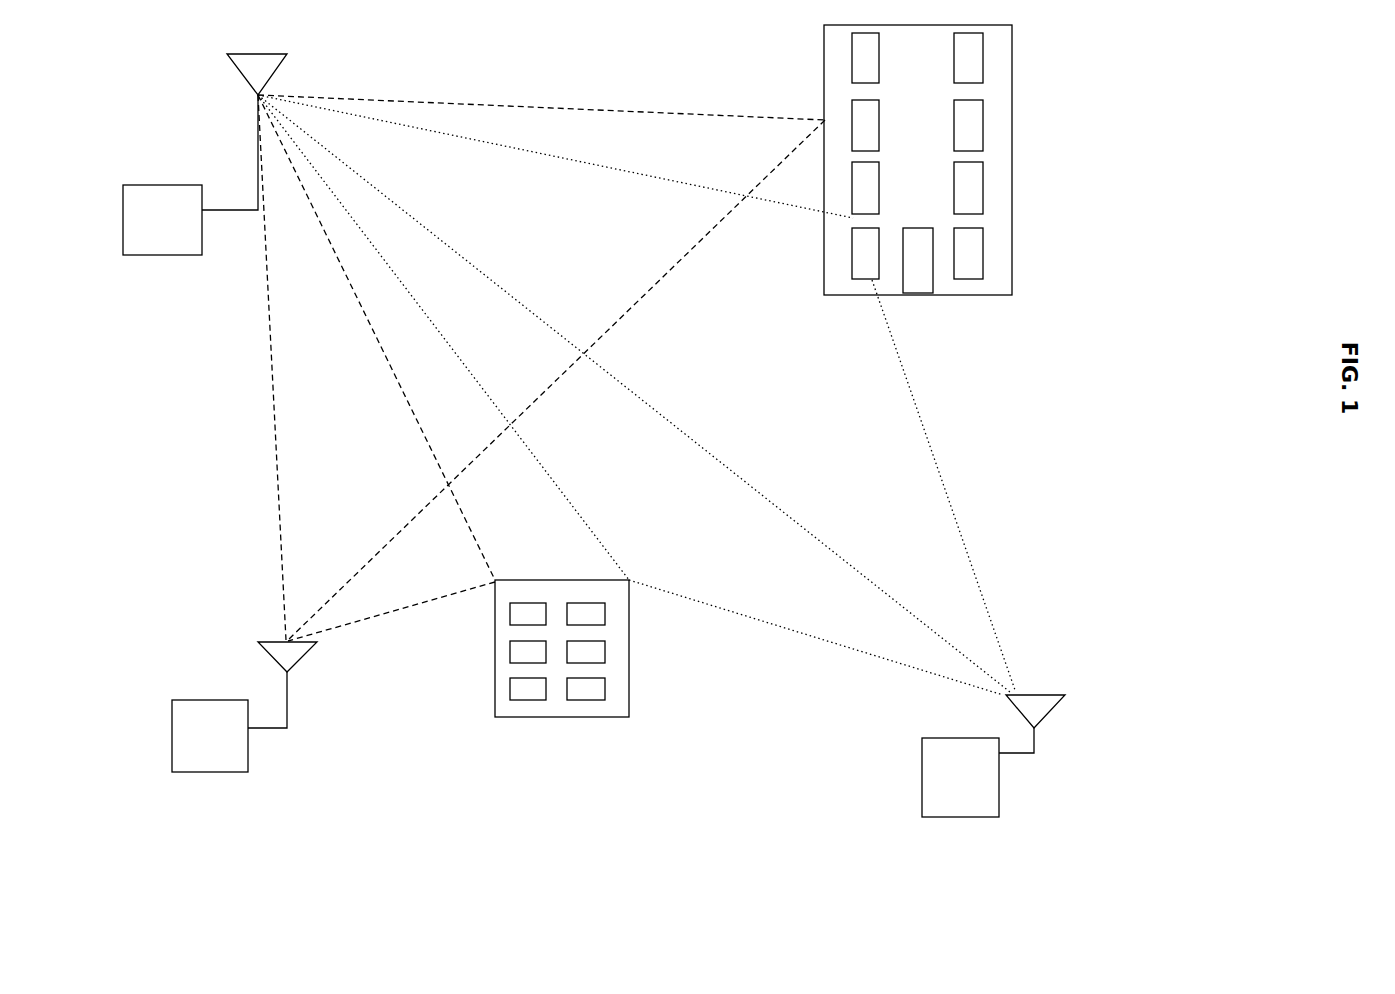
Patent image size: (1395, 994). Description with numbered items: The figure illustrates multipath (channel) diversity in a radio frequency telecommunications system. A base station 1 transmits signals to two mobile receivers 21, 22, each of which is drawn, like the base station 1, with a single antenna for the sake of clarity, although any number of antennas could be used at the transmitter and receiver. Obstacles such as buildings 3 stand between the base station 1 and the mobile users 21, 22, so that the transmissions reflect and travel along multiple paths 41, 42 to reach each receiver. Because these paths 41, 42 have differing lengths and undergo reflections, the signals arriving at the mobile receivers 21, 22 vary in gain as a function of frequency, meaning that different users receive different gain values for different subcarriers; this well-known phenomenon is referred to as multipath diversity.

The base station 1 is at (143, 162).
The mobile receiver 21 is at (982, 825).
The mobile receiver 22 is at (191, 787).
The building 3 is at (1012, 97).
The multiple paths 41 is at (868, 653).
The multiple paths 42 is at (415, 605).